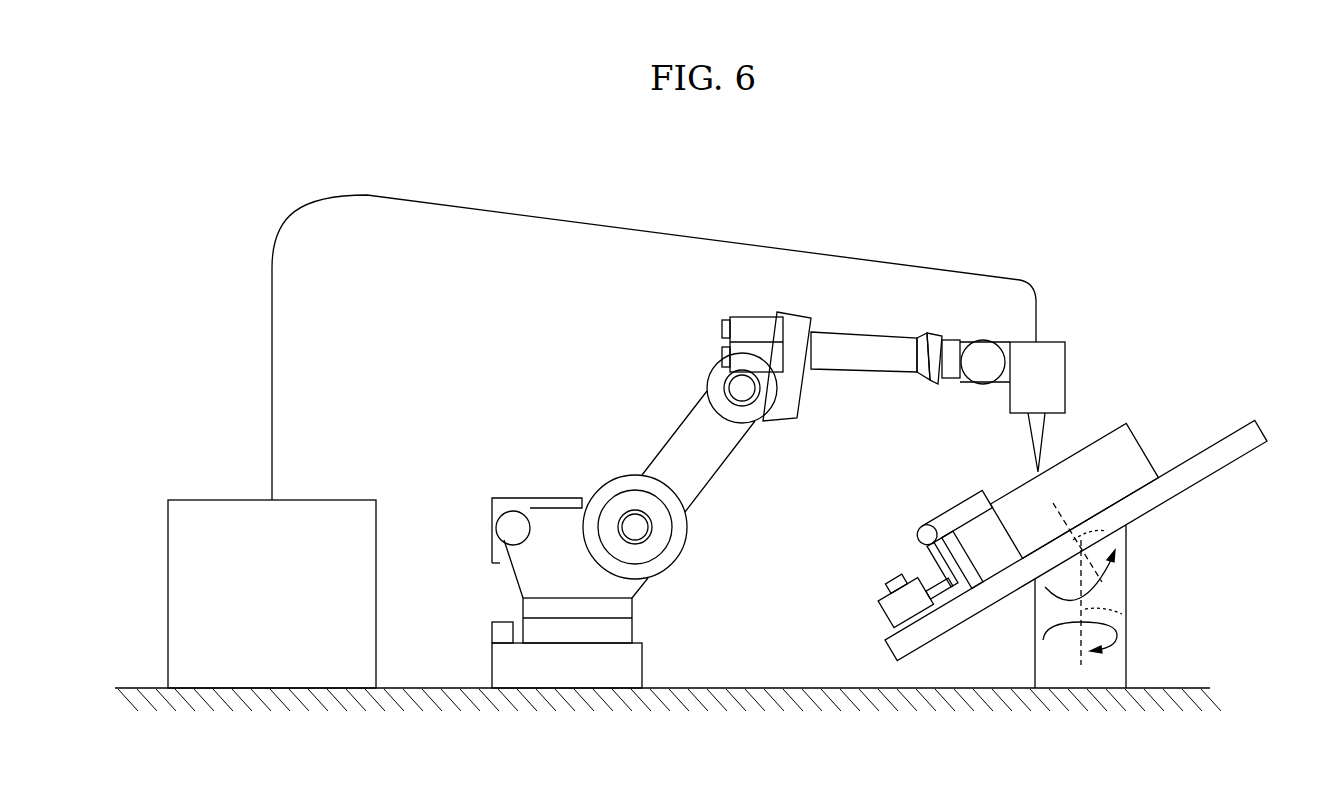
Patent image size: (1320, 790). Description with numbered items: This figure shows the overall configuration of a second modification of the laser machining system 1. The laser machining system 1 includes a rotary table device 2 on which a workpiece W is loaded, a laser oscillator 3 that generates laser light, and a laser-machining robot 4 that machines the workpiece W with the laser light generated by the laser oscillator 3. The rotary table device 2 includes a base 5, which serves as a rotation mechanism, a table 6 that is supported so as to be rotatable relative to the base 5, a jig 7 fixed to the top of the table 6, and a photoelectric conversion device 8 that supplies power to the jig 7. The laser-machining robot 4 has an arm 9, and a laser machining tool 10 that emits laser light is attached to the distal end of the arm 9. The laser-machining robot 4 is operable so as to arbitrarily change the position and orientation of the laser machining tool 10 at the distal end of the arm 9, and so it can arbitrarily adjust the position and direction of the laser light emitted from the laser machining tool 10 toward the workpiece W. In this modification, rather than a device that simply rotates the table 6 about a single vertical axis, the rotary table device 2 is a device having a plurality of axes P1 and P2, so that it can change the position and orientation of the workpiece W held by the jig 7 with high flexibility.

The laser machining system 1 is at (1074, 210).
The rotary table device 2 is at (1076, 504).
The laser oscillator 3 is at (230, 500).
The laser-machining robot 4 is at (728, 500).
The base 5 is at (1126, 657).
The table 6 is at (1223, 433).
The jig 7 is at (948, 511).
The photoelectric conversion device 8 is at (884, 612).
The arm 9 is at (853, 370).
The laser machining tool 10 is at (1065, 355).
The workpiece W is at (1142, 447).
The axis P1 is at (1128, 614).
The axis P2 is at (1128, 533).